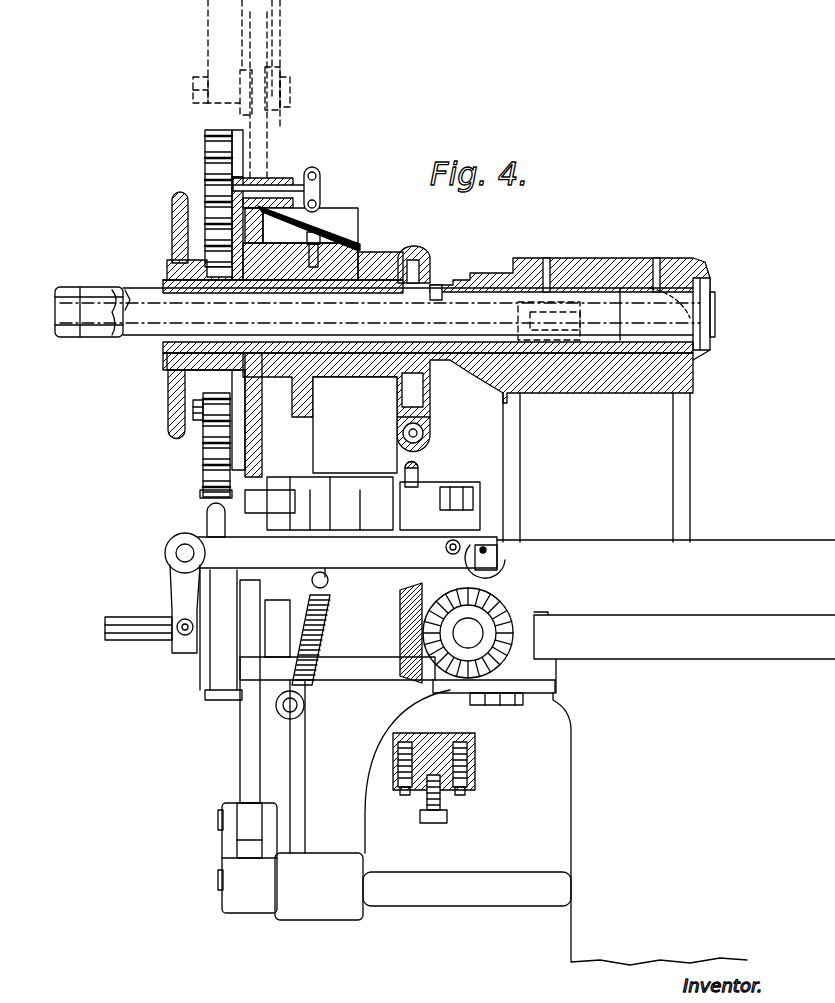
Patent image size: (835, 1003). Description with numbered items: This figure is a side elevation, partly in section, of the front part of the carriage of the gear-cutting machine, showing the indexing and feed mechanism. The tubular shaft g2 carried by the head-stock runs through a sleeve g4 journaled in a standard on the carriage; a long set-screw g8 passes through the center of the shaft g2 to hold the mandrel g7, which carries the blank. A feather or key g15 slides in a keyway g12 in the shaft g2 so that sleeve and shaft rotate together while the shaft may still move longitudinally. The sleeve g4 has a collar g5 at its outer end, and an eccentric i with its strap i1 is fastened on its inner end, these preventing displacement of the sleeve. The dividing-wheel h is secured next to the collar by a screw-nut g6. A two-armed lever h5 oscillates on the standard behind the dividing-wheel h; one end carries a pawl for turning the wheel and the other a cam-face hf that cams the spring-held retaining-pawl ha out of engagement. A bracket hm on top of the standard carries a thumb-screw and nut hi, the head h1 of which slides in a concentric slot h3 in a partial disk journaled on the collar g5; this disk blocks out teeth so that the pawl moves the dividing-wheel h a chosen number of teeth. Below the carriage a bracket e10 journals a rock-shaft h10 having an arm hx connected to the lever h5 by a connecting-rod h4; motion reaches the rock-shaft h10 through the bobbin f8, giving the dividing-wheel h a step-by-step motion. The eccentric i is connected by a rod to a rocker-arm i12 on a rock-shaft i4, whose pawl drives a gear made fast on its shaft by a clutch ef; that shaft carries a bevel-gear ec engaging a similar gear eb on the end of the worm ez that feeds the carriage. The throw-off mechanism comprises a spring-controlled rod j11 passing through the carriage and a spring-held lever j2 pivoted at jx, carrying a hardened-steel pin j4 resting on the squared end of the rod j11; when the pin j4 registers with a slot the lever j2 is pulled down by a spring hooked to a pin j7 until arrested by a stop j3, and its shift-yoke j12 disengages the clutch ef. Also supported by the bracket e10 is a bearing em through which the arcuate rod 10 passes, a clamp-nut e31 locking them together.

The two-armed lever h5 is at (255, 155).
The dividing-wheel h is at (208, 150).
The concentric slot h3 is at (232, 180).
The thumb-screw and nut hi is at (250, 203).
The clamp knob h1 is at (312, 170).
The bracket hm is at (300, 230).
The sleeve g4 is at (378, 255).
The strap i1 is at (420, 250).
The eccentric i is at (432, 290).
The screw-nut g6 is at (178, 200).
The collar g5 is at (175, 266).
The mandrel g7 is at (605, 314).
The long set-screw g8 is at (113, 318).
The tubular shaft g2 is at (152, 310).
The feather or key g15 is at (162, 364).
The keyway g12 is at (176, 400).
The cam-face hf is at (262, 466).
The rock-shaft i4 is at (296, 500).
The rocker-arm i12 is at (418, 478).
The hardened-steel pin j4 is at (485, 548).
The rod j11 is at (498, 558).
The retaining-pawl ha is at (210, 520).
The pivot jx is at (178, 553).
The spring-held lever j2 is at (341, 552).
The shift-yoke j12 is at (175, 590).
The stop j3 is at (362, 586).
The bevel-gear ec is at (400, 636).
The gear hub ez is at (468, 633).
The bevel-gear eb is at (490, 604).
The clutch ef is at (180, 640).
The bobbin f8 is at (188, 660).
The pin j7 is at (305, 708).
The bearing em is at (420, 735).
The bracket e10 is at (392, 771).
The arcuate rod 10 is at (476, 758).
The clamp-nut e31 is at (416, 805).
The connecting-rod h4 is at (240, 752).
The arm hx is at (226, 840).
The rock-shaft h10 is at (432, 885).